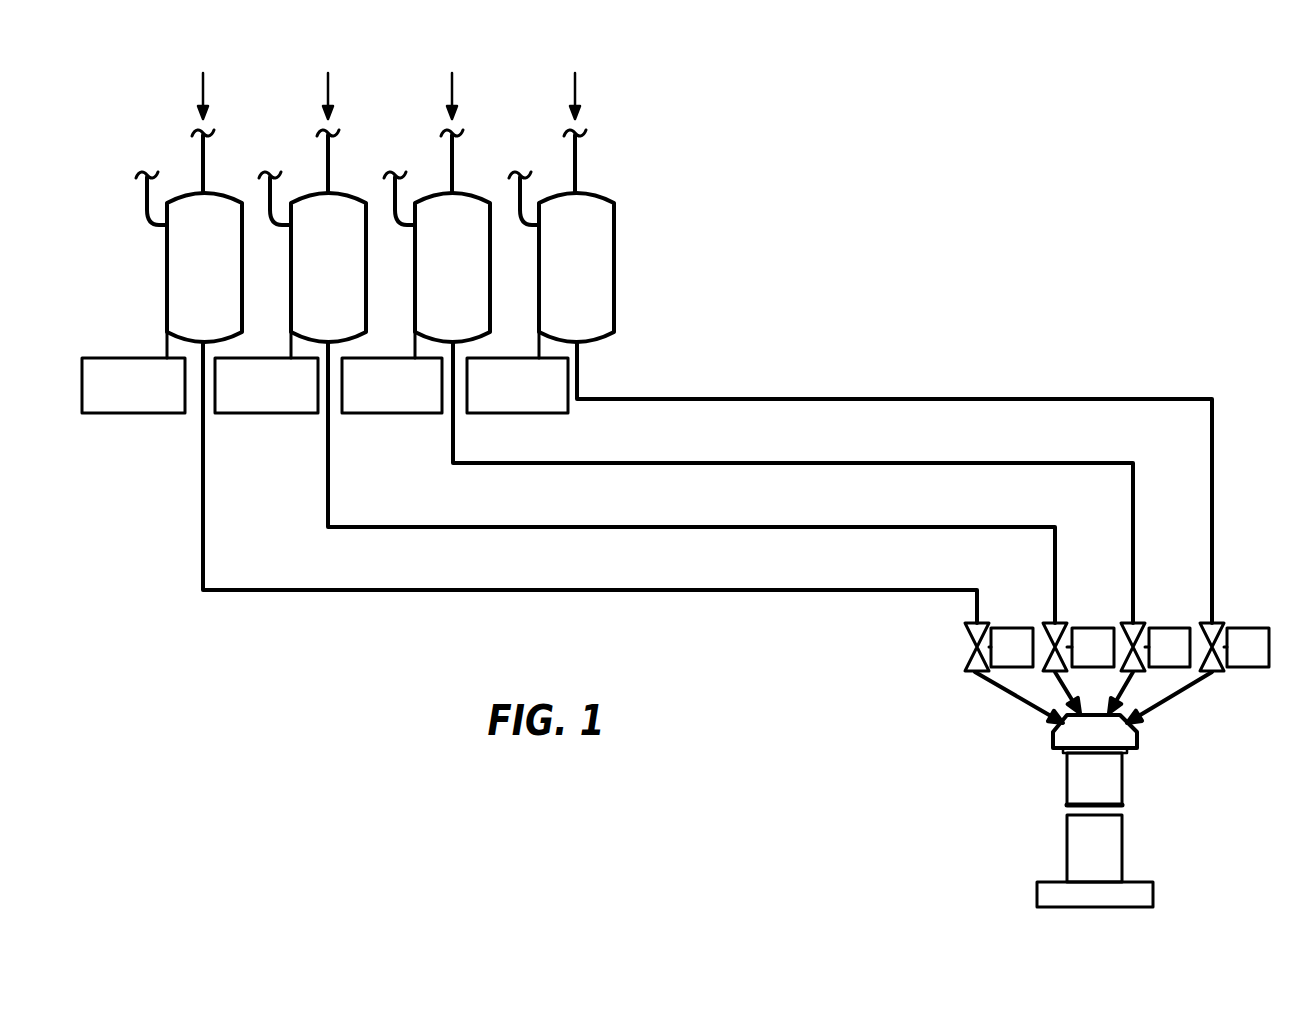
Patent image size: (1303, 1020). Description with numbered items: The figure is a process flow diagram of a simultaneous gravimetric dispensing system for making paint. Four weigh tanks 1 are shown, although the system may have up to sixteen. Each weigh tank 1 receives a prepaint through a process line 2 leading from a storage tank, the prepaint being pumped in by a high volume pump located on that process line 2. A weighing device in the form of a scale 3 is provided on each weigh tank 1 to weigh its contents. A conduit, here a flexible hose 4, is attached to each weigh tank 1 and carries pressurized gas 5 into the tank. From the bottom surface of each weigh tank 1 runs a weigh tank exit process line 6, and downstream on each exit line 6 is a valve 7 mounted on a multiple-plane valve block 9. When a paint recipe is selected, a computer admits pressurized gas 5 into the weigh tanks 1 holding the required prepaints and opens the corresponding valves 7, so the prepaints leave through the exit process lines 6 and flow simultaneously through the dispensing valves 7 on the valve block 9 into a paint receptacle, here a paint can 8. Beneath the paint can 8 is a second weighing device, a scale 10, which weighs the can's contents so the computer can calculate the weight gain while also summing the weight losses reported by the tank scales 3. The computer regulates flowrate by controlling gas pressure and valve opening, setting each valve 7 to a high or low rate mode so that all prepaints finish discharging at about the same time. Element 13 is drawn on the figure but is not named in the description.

The weigh tank 1 is at (167, 278).
The process line 2 is at (147, 184).
The weighing device (scale) 3 is at (142, 413).
The conduit (flexible hose) 4 is at (203, 150).
The pressurized gas 5 is at (388, 80).
The weigh tank exit process line 6 is at (936, 398).
The valve 7 is at (1010, 628).
The paint receptacle (paint can) 8 is at (1125, 845).
The multiple-plane valve block 9 is at (1137, 738).
The weighing device (scale) 10 is at (1153, 892).
The upper cylinder 13 is at (1125, 778).